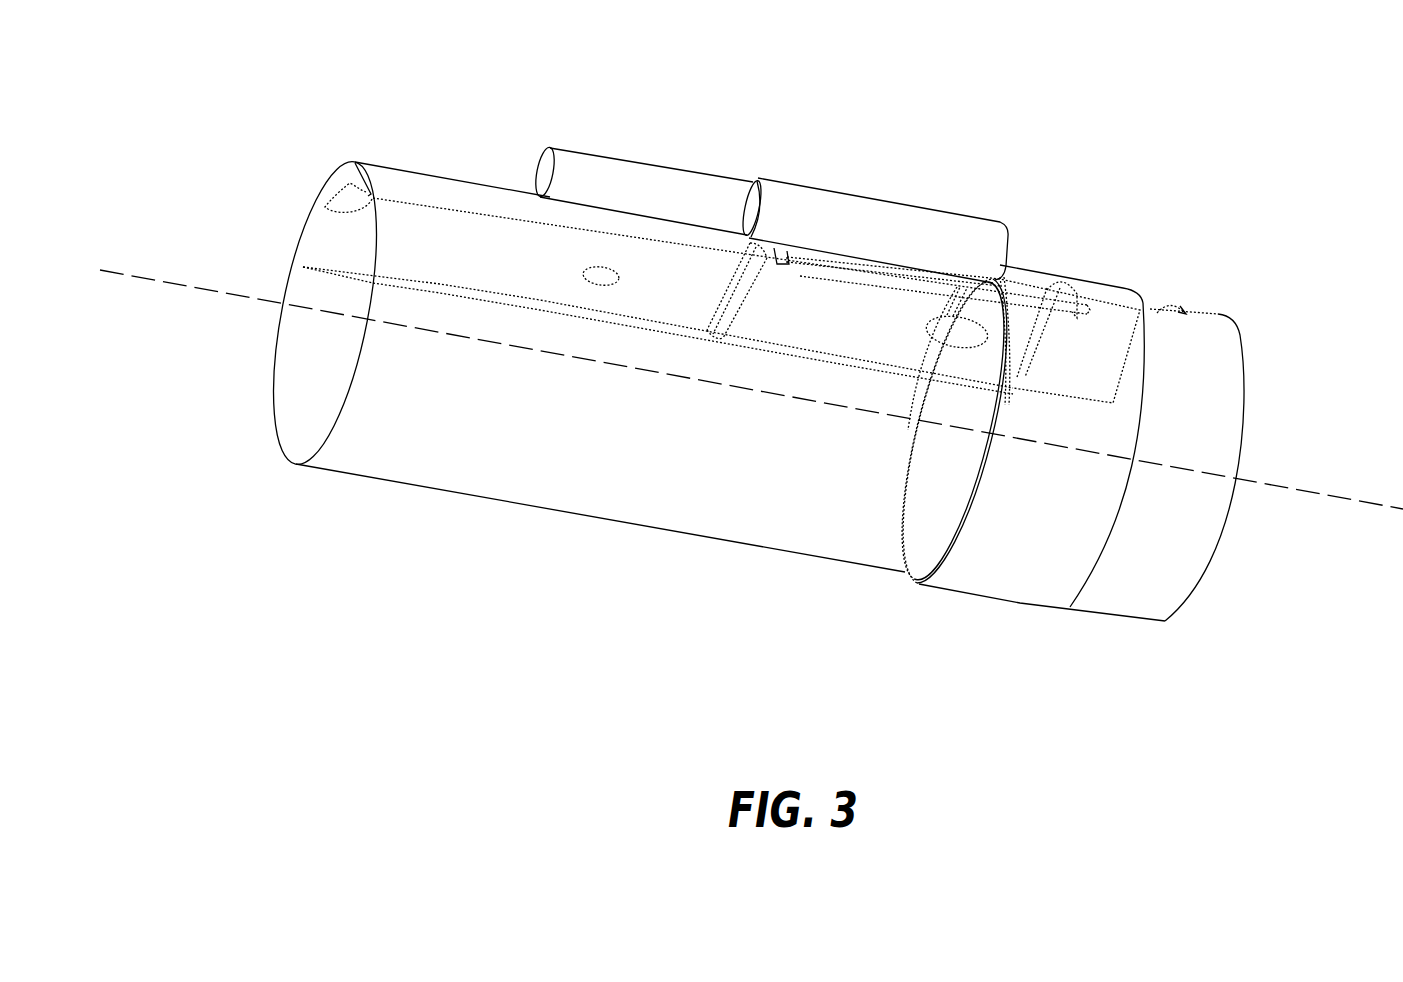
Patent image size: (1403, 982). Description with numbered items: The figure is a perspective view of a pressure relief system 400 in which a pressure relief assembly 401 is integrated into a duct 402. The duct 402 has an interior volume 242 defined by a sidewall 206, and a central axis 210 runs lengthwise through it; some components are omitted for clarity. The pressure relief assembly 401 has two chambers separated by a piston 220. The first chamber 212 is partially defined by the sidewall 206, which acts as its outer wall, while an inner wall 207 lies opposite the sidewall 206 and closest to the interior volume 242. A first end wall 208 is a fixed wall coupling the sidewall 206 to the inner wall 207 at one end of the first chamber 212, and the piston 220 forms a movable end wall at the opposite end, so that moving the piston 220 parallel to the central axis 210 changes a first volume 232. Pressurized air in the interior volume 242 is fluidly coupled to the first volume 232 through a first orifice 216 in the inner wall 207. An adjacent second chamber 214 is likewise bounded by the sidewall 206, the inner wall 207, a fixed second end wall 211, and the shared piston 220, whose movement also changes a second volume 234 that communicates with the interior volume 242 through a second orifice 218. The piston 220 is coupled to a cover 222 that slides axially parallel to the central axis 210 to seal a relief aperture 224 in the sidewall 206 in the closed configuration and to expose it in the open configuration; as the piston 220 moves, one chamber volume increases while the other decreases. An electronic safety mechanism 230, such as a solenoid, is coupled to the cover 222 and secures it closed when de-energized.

The pressure relief system 400 is at (262, 78).
The sidewall 206 is at (432, 170).
The first end wall 208 is at (343, 177).
The inner wall 207 is at (350, 208).
The electronic safety mechanism 230 is at (623, 172).
The pressure relief assembly 401 is at (1022, 180).
The first volume 232 is at (517, 264).
The first orifice 216 is at (600, 280).
The first chamber 212 is at (658, 297).
The piston 220 is at (725, 315).
The relief aperture 224 is at (1132, 347).
The second orifice 218 is at (948, 333).
The second volume 234 is at (1003, 370).
The second chamber 214 is at (952, 367).
The second end wall 211 is at (1013, 380).
The interior volume 242 is at (700, 441).
The cover 222 is at (988, 587).
The duct 402 is at (1127, 600).
The central axis 210 is at (1268, 478).